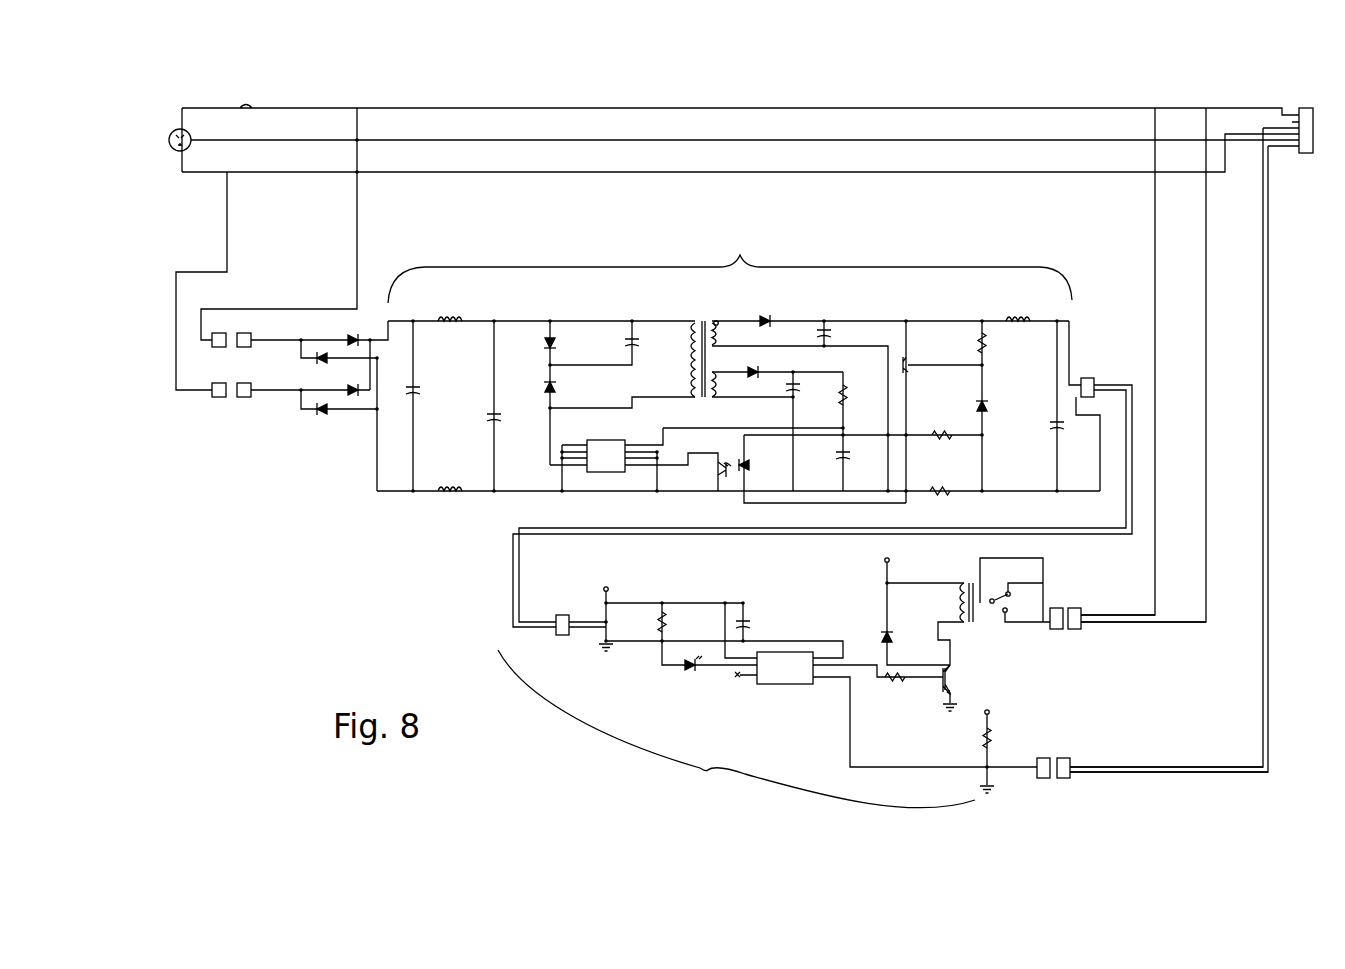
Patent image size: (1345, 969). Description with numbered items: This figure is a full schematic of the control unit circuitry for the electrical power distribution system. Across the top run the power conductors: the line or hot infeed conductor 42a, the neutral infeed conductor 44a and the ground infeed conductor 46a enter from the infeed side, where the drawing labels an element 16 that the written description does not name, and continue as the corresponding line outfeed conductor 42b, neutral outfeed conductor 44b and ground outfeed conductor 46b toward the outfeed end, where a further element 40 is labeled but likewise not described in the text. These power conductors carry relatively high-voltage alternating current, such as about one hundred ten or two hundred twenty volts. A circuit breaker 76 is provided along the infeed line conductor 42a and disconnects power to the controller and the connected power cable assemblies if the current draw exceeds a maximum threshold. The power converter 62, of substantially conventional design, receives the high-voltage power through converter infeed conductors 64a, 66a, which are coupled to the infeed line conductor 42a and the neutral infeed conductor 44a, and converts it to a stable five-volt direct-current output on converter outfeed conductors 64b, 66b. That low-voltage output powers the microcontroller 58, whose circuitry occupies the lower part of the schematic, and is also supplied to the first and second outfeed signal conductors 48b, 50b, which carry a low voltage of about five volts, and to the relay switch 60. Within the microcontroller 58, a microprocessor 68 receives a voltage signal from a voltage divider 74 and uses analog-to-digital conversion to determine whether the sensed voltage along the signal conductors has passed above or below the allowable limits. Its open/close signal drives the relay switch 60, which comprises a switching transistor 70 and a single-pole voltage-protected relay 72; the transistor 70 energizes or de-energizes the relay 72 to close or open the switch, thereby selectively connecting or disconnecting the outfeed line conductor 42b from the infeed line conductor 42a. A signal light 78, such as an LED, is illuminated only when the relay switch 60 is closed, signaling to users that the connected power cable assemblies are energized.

The power connector 16 is at (176, 149).
The connector 40 is at (1292, 100).
The line infeed conductor 42a is at (217, 108).
The line outfeed conductor 42b is at (1215, 108).
The neutral infeed conductor 44a is at (268, 172).
The neutral outfeed conductor 44b is at (1277, 128).
The ground infeed conductor 46a is at (332, 140).
The ground outfeed conductor 46b is at (1245, 142).
The first outfeed signal conductor 48b is at (1263, 248).
The second outfeed signal conductor 50b is at (1269, 218).
The microcontroller 58 is at (883, 672).
The relay switch 60 is at (1055, 642).
The power converter 62 is at (675, 368).
The converter infeed conductor 64a is at (357, 200).
The converter outfeed conductor 64b is at (1108, 382).
The converter infeed conductor 66a is at (227, 238).
The converter outfeed conductor 66b is at (1128, 437).
The microprocessor 68 is at (787, 700).
The switching transistor 70 is at (928, 698).
The relay 72 is at (968, 572).
The voltage divider 74 is at (975, 743).
The circuit breaker 76 is at (272, 82).
The signal light 78 is at (698, 685).